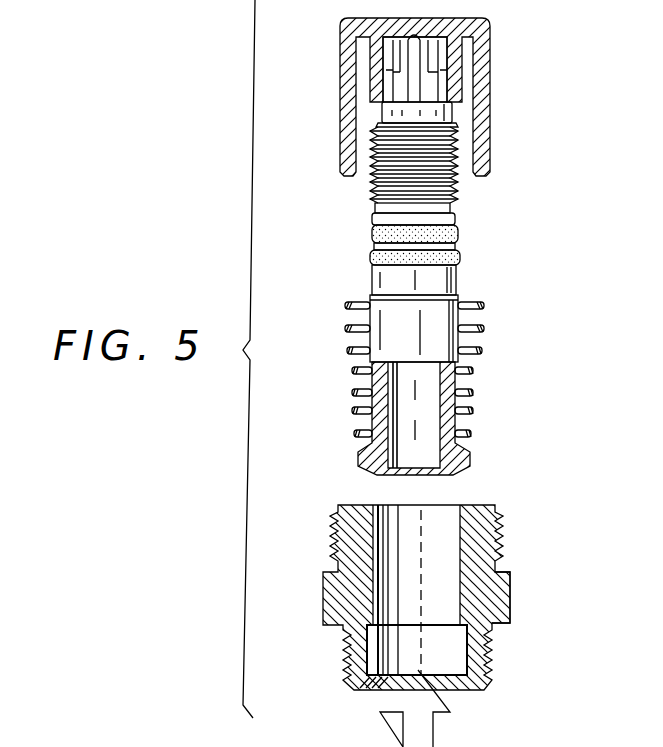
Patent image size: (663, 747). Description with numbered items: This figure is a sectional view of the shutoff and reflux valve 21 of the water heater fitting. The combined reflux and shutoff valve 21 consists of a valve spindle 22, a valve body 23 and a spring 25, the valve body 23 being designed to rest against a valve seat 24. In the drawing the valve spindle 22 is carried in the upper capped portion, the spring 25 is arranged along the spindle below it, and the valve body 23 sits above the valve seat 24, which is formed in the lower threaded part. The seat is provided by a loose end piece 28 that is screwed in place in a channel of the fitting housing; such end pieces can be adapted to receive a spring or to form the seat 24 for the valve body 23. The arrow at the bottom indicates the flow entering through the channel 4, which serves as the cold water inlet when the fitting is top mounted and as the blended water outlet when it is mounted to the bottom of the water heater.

The shutoff and reflux valve 21 is at (527, 132).
The valve spindle 22 is at (440, 60).
The valve body 23 is at (470, 445).
The valve seat 24 is at (485, 507).
The spring 25 is at (482, 327).
The loose end piece 28 is at (512, 627).
The cold water inlet 4 is at (455, 686).